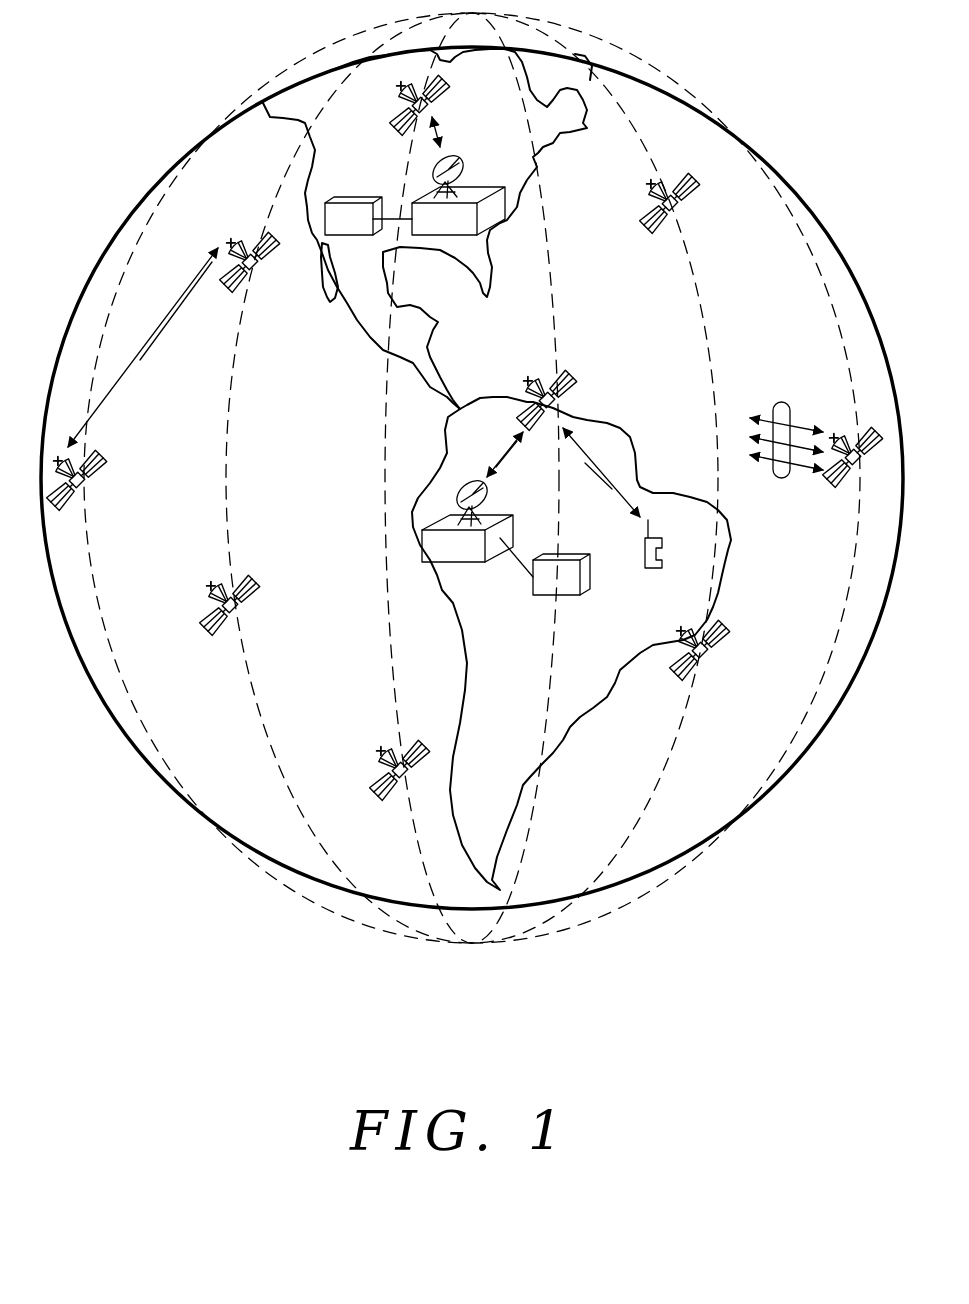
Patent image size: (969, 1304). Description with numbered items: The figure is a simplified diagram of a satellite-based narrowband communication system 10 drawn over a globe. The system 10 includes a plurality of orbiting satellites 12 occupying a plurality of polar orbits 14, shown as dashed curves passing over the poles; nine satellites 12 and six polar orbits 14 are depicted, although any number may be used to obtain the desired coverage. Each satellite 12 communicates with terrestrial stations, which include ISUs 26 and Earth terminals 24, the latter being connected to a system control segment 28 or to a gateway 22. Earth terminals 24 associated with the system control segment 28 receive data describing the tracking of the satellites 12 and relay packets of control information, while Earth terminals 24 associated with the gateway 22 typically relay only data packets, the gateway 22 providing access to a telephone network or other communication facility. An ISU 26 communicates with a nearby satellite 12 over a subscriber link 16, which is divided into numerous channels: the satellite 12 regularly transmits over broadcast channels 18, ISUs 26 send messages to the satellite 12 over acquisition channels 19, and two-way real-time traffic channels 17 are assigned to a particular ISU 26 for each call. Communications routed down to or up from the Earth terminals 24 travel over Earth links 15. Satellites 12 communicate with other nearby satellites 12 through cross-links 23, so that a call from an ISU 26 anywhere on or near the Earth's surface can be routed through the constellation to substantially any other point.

The communication system 10 is at (373, 955).
The satellite 12 is at (400, 113).
The polar orbit 14 is at (282, 178).
The Earth link 15 is at (508, 455).
The subscriber link 16 is at (610, 486).
The traffic channel 17 is at (750, 418).
The broadcast channel 18 is at (752, 437).
The acquisition channel 19 is at (752, 456).
The gateway 22 is at (573, 597).
The cross-link 23 is at (150, 343).
The Earth terminal 24 is at (480, 186).
The ISU 26 is at (653, 570).
The system control segment 28 is at (363, 198).